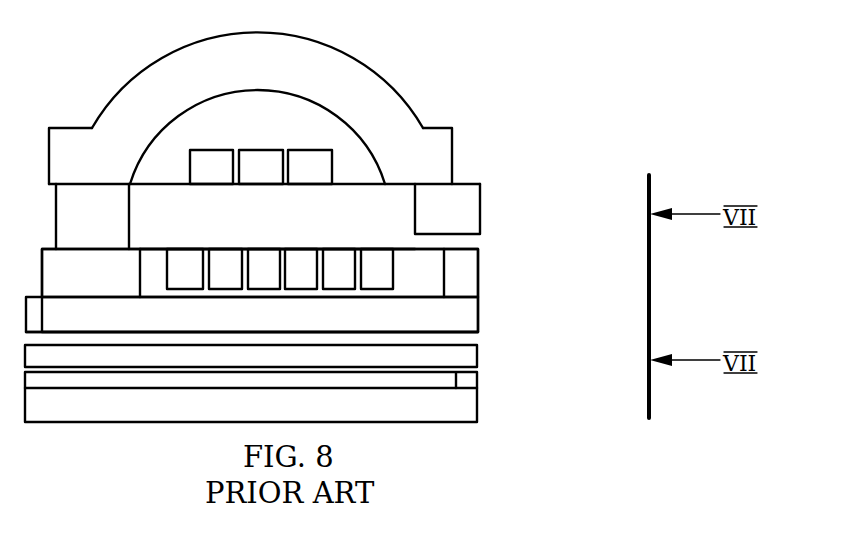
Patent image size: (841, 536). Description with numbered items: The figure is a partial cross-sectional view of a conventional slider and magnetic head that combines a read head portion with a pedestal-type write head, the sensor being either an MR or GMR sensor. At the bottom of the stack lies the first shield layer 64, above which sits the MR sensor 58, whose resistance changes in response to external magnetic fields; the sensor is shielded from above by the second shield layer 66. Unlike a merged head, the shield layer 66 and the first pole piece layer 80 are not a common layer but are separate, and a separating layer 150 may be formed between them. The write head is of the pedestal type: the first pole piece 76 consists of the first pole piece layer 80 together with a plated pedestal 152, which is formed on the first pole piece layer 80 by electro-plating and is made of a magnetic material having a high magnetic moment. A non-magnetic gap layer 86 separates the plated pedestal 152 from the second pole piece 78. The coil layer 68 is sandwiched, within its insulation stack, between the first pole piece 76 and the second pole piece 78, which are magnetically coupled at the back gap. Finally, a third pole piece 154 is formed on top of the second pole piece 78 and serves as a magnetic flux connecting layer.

The third pole piece 154 is at (388, 82).
The second pole piece 78 is at (482, 210).
The coil layer 68 is at (266, 236).
The gap layer 86 is at (492, 243).
The plated pedestal 152 is at (470, 275).
The first pole piece layer 80 is at (465, 318).
The first pole piece 76 is at (548, 294).
The separating layer 150 is at (492, 336).
The second shield layer 66 is at (478, 361).
The MR sensor 58 is at (470, 380).
The first shield layer 64 is at (478, 402).